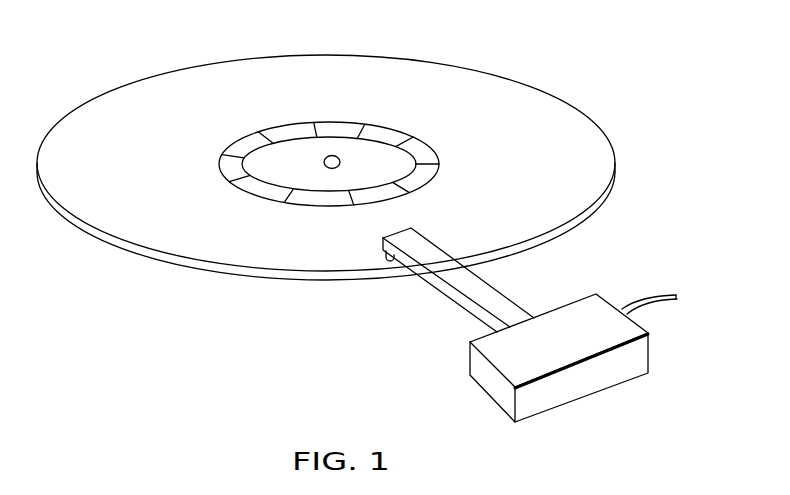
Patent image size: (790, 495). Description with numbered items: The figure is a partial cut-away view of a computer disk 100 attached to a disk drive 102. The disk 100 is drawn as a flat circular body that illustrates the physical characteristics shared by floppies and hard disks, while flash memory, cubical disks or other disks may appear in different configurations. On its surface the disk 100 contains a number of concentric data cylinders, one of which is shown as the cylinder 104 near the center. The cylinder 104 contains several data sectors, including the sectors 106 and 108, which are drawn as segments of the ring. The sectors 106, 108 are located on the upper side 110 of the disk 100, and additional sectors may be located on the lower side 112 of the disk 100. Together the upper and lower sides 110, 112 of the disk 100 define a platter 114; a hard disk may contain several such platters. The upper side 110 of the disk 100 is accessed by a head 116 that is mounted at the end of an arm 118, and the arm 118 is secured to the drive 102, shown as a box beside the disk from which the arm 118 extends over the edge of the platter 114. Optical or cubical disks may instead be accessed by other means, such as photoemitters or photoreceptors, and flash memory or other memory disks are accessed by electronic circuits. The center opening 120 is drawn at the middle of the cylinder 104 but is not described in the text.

The disk 100 is at (356, 154).
The disk drive 102 is at (485, 373).
The cylinder 104 is at (342, 132).
The sector 106 is at (270, 137).
The sector 108 is at (237, 155).
The upper side 110 is at (458, 93).
The lower side 112 is at (586, 221).
The platter 114 is at (533, 245).
The head 116 is at (388, 260).
The arm 118 is at (458, 280).
The center hole 120 is at (336, 156).